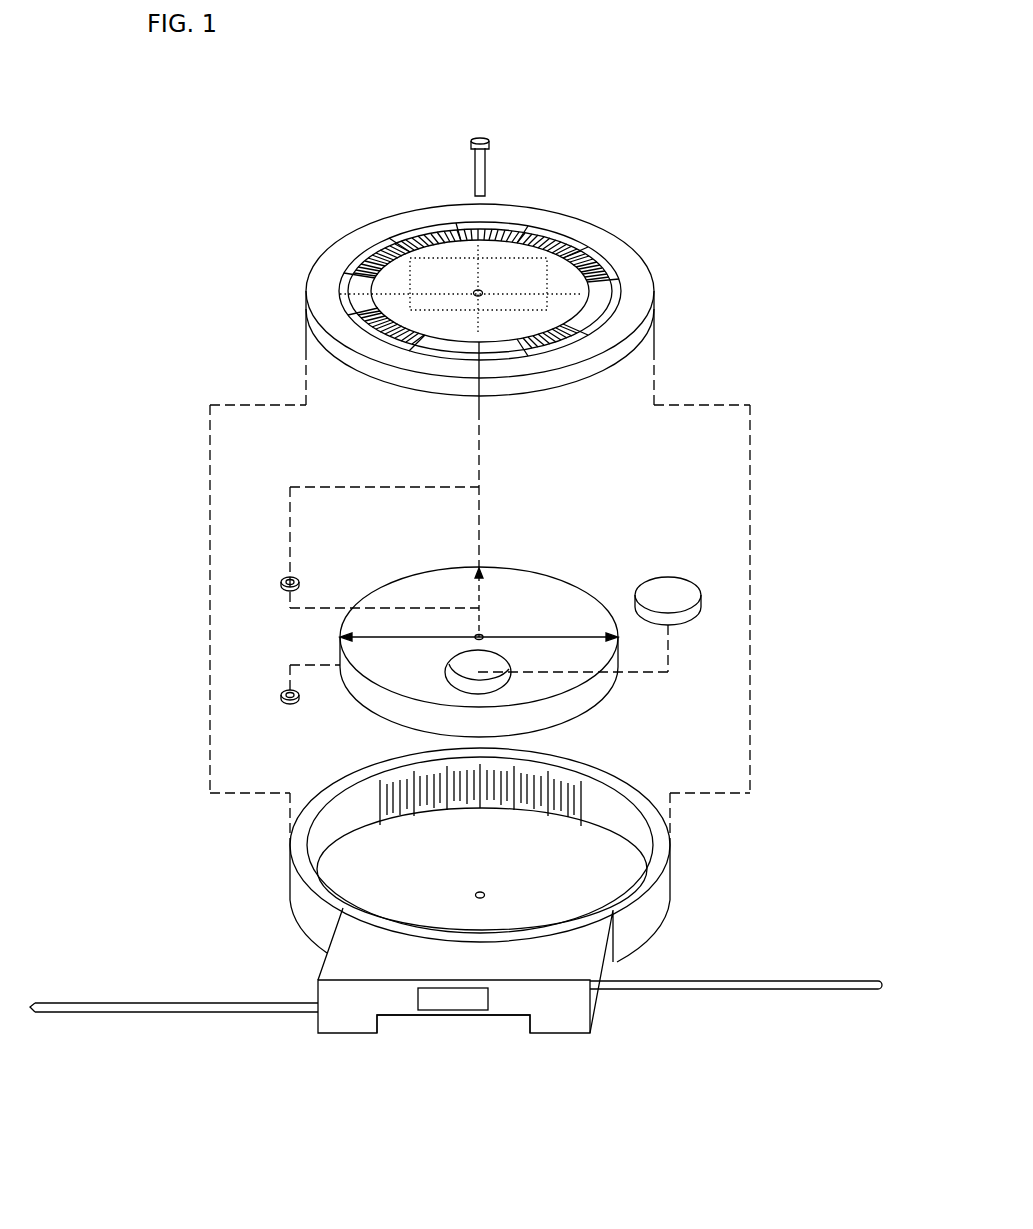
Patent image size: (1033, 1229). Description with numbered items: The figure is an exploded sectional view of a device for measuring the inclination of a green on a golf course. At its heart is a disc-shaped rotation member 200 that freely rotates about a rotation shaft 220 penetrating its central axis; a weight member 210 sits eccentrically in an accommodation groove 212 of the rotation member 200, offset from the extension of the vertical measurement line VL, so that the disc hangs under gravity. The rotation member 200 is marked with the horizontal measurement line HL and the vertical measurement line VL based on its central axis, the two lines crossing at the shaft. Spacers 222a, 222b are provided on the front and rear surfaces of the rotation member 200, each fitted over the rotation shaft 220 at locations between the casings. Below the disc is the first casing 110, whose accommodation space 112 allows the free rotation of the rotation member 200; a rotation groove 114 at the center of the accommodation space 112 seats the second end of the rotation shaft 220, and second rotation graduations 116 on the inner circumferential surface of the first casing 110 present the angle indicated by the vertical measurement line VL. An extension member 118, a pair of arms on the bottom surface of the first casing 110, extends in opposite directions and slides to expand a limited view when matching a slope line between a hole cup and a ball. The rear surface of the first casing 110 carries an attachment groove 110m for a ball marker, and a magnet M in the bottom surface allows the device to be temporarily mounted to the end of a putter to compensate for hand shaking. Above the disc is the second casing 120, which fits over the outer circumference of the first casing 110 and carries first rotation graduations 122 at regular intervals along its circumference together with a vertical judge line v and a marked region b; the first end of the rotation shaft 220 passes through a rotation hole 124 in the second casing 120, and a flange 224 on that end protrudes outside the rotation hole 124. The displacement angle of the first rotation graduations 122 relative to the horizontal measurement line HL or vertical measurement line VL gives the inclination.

The first casing 110 is at (283, 882).
The attachment groove 110m is at (507, 1017).
The accommodation space 112 is at (610, 860).
The rotation groove 114 is at (485, 893).
The second rotation graduations 116 is at (588, 813).
The extension member 118 is at (142, 1012).
The second casing 120 is at (560, 212).
The first rotation graduations 122 is at (607, 285).
The rotation hole 124 is at (474, 293).
The rotation member 200 is at (563, 582).
The weight member 210 is at (652, 593).
The accommodation groove 212 is at (492, 682).
The rotation shaft 220 is at (488, 183).
The flange 224 is at (490, 143).
The spacer 222a is at (300, 576).
The spacer 222b is at (299, 702).
The magnet M is at (452, 1000).
The bubble b is at (512, 257).
The vertical judge line v is at (548, 278).
The vertical measurement line VL is at (485, 590).
The horizontal measurement line HL is at (522, 637).